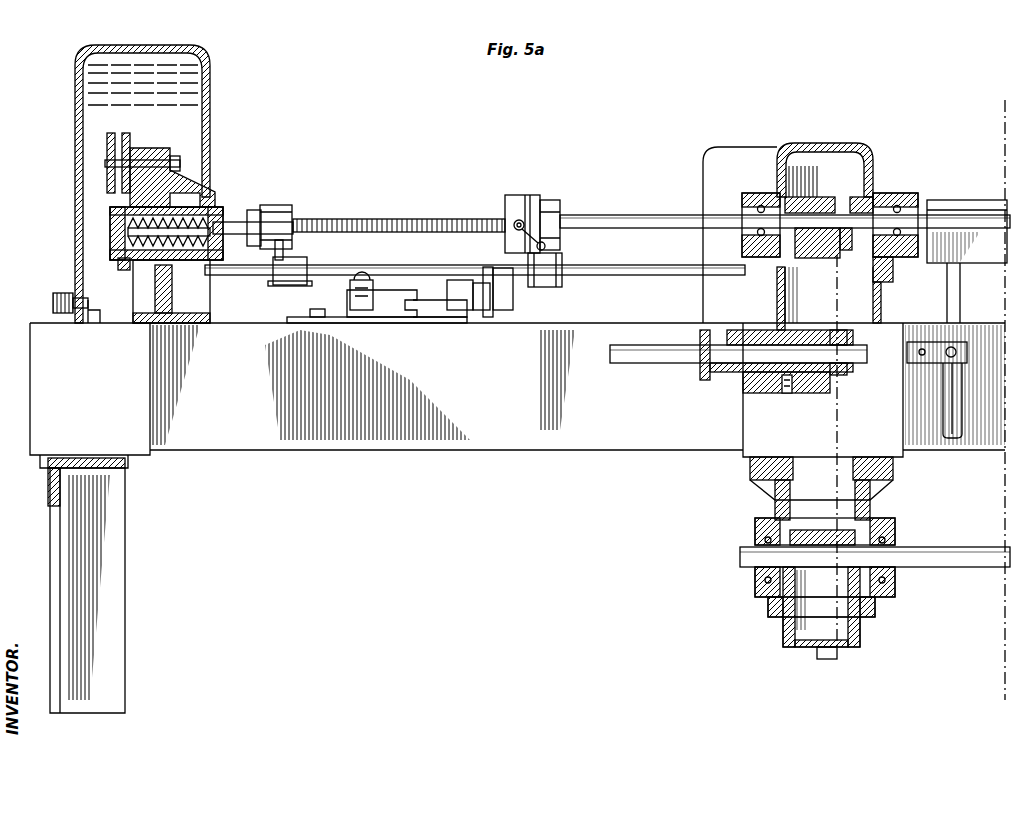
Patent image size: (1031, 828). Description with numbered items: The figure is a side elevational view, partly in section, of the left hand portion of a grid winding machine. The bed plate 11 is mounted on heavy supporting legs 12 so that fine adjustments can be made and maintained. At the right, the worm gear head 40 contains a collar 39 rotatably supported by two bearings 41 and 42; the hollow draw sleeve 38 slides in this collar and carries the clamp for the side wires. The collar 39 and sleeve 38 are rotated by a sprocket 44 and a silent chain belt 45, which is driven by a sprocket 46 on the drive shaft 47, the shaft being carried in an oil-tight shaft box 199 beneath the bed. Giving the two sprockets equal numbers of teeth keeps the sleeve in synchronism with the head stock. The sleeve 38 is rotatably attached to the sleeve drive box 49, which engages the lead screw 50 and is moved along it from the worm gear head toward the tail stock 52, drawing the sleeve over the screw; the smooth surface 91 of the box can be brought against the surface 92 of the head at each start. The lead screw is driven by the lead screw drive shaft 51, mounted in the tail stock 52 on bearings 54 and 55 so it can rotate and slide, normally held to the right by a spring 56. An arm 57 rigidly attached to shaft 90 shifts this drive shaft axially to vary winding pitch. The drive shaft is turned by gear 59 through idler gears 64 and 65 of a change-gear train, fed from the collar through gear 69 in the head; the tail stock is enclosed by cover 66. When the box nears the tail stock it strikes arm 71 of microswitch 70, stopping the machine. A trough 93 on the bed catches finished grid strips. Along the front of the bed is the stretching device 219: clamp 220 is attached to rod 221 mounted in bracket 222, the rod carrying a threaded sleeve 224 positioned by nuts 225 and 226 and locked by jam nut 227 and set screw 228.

The bed plate 11 is at (445, 435).
The supporting legs 12 is at (112, 548).
The draw sleeve 38 is at (945, 212).
The collar 39 is at (900, 195).
The worm gear head 40 is at (845, 145).
The bearing 41 is at (795, 205).
The bearing 42 is at (888, 282).
The sprocket 44 is at (820, 262).
The silent chain belt 45 is at (850, 410).
The sprocket 46 is at (810, 540).
The drive shaft 47 is at (940, 547).
The sleeve drive box 49 is at (545, 198).
The lead screw 50 is at (400, 218).
The lead screw drive shaft 51 is at (228, 220).
The tail stock 52 is at (190, 195).
The bearing 54 is at (205, 210).
The bearing 55 is at (180, 197).
The spring 56 is at (120, 268).
The arm 57 is at (306, 256).
The gear 59 is at (120, 212).
The idler gear 64 is at (107, 140).
The idler gear 65 is at (130, 140).
The tail stock cover 66 is at (205, 52).
The gear 69 is at (865, 195).
The microswitch 70 is at (384, 310).
The arm 71 is at (350, 295).
The shaft 90 is at (418, 265).
The smooth surface 91 is at (562, 206).
The surface 92 is at (745, 200).
The trough 93 is at (985, 205).
The shaft box 199 is at (785, 638).
The stretching device 219 is at (740, 388).
The clamp 220 is at (967, 358).
The rod 221 is at (626, 363).
The bracket 222 is at (760, 330).
The sleeve 224 is at (792, 338).
The nut 225 is at (725, 372).
The nut 226 is at (848, 338).
The jam nut 227 is at (700, 368).
The set screw 228 is at (787, 393).